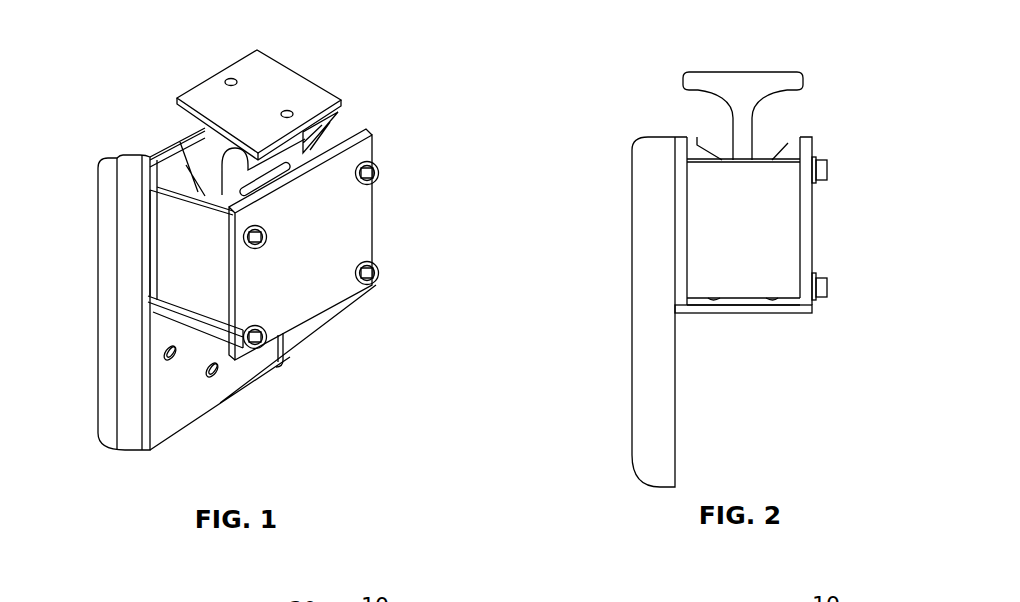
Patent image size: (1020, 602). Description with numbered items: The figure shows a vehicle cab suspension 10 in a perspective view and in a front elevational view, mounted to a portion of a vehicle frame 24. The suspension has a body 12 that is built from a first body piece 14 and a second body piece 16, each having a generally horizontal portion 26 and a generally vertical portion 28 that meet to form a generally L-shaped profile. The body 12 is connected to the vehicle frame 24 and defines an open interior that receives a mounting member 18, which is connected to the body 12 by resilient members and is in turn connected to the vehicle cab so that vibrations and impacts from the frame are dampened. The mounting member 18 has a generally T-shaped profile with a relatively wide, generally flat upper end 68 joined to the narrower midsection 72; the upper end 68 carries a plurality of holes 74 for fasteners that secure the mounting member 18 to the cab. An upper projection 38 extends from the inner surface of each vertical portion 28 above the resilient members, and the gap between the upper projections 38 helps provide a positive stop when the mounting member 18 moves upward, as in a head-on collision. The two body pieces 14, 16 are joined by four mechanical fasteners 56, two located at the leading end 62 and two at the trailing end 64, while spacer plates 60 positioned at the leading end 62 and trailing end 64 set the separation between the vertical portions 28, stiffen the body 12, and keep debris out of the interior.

In FIG. 1, the vehicle cab suspension 10 is at (415, 81).
In FIG. 2, the vehicle cab suspension 10 is at (656, 46).
In FIG. 1, the body 12 is at (380, 226).
In FIG. 2, the body 12 is at (772, 314).
In FIG. 1, the first body piece 14 is at (152, 150).
In FIG. 2, the first body piece 14 is at (697, 313).
In FIG. 1, the second body piece 16 is at (347, 239).
In FIG. 2, the second body piece 16 is at (810, 138).
In FIG. 1, the mounting member 18 is at (209, 79).
In FIG. 2, the mounting member 18 is at (775, 100).
In FIG. 1, the vehicle frame 24 is at (107, 390).
In FIG. 2, the vehicle frame 24 is at (645, 457).
In FIG. 1, the generally horizontal portion 26 is at (205, 335).
In FIG. 2, the generally horizontal portion 26 is at (757, 313).
In FIG. 1, the generally vertical portion 28 is at (150, 215).
In FIG. 2, the generally vertical portion 28 is at (680, 236).
In FIG. 1, the upper projection 38 is at (193, 145).
In FIG. 2, the upper projection 38 is at (697, 147).
In FIG. 1, the mechanical fasteners 56 is at (365, 185).
In FIG. 2, the mechanical fasteners 56 is at (828, 172).
In FIG. 1, the spacer plate 60 is at (177, 252).
In FIG. 1, the leading end 62 is at (378, 187).
In FIG. 1, the trailing end 64 is at (225, 337).
In FIG. 2, the trailing end 64 is at (680, 182).
In FIG. 1, the upper end 68 is at (272, 70).
In FIG. 2, the upper end 68 is at (745, 72).
In FIG. 1, the midsection 72 is at (330, 130).
In FIG. 2, the midsection 72 is at (735, 140).
In FIG. 1, the holes 74 is at (231, 78).